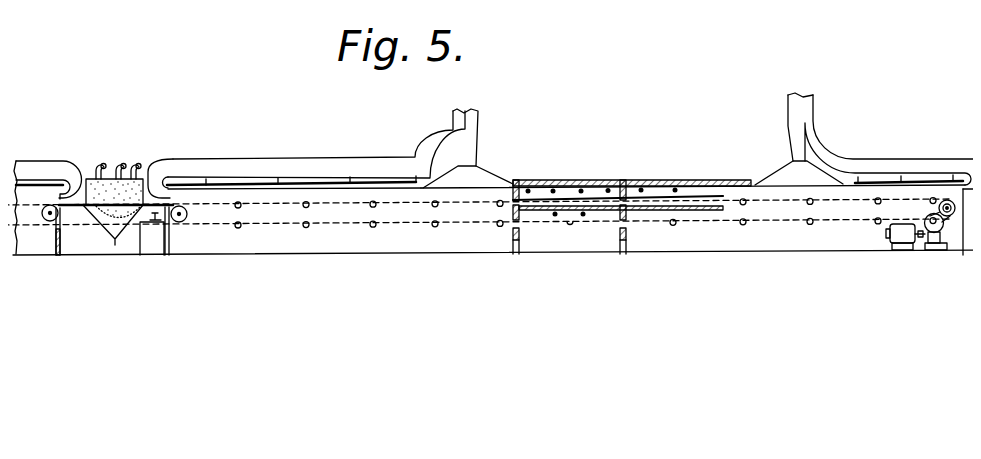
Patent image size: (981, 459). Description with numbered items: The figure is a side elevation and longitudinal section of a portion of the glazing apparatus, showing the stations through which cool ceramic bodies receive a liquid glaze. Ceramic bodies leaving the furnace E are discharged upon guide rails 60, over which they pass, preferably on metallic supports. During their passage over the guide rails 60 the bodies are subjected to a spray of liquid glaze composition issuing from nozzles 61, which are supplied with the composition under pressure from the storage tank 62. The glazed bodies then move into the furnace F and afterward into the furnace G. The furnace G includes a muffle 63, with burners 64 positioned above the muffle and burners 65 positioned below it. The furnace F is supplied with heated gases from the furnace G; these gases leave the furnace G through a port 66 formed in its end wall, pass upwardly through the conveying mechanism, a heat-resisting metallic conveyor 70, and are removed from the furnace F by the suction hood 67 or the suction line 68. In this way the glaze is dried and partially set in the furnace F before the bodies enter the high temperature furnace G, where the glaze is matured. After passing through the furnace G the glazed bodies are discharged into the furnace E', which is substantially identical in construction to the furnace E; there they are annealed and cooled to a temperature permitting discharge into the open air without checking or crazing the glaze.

The guide rails 60 is at (116, 230).
The nozzles 61 is at (133, 163).
The storage tank 62 is at (146, 246).
The muffle 63 is at (565, 195).
The burners 64 is at (550, 185).
The burners 65 is at (552, 213).
The port 66 is at (511, 233).
The suction hood 67 is at (474, 172).
The suction line 68 is at (249, 160).
The heat-resisting metallic conveyor 70 is at (320, 200).
The furnace E is at (45, 251).
The furnace F is at (348, 240).
The furnace G is at (568, 246).
The furnace E' is at (761, 263).